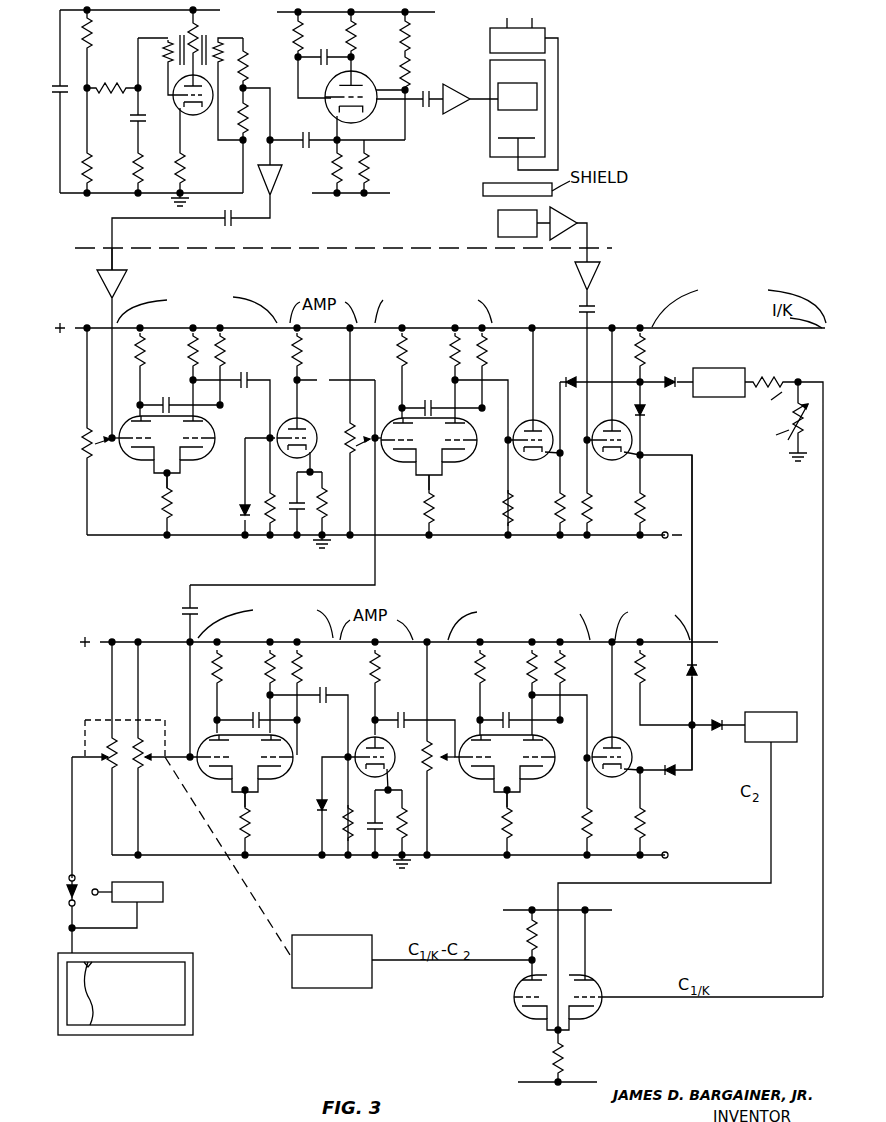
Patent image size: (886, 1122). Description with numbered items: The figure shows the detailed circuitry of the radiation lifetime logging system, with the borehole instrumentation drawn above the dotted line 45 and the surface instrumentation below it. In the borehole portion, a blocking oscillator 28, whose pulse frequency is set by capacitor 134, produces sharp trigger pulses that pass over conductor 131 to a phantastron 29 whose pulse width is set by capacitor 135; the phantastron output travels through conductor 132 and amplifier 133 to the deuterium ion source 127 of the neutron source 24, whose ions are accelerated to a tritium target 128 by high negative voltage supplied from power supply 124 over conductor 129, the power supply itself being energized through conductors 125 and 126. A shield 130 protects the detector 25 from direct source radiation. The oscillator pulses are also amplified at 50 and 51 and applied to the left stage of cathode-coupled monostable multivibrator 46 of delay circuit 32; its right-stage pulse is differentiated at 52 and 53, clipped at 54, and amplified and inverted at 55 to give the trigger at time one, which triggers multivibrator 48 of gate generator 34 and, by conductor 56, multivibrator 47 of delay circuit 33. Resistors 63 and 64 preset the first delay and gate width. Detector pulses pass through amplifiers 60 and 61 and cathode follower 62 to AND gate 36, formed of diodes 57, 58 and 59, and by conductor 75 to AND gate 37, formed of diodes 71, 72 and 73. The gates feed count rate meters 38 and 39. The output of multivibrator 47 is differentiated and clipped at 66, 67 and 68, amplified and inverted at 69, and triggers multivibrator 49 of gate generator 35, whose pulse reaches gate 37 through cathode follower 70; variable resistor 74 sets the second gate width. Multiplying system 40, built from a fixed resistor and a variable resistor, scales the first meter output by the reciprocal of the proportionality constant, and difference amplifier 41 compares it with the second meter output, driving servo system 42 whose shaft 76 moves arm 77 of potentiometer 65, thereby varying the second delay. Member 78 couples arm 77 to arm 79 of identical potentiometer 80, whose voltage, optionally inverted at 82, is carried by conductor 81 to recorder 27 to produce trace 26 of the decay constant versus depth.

The source 24 is at (490, 77).
The detector 25 is at (498, 224).
The trace 26 is at (94, 988).
The recorder 27 is at (186, 953).
The oscillator 28 is at (190, 76).
The phantastron 29 is at (355, 85).
The delay circuit 32 is at (179, 412).
The delay circuit 33 is at (261, 729).
The gate generator 34 is at (444, 412).
The gate generator 35 is at (519, 729).
The AND gate 36 is at (706, 373).
The AND gate 37 is at (663, 723).
The count rate meter 38 is at (728, 368).
The count rate meter 39 is at (778, 708).
The multiplying system 40 is at (786, 670).
The difference circuit 41 is at (510, 1010).
The servo system 42 is at (346, 935).
The dotted line 45 is at (605, 250).
The cathode-coupled monostable multivibrator 46 is at (163, 453).
The cathode-coupled monostable multivibrator 47 is at (245, 771).
The cathode-coupled monostable multivibrator 48 is at (429, 454).
The cathode-coupled monostable multivibrator 49 is at (507, 774).
The amplifier 50 is at (280, 192).
The amplifier 51 is at (128, 287).
The differentiating element 52 is at (242, 378).
The differentiating element 53 is at (268, 506).
The clipper 54 is at (240, 518).
The amplifier 55 is at (301, 425).
The conductor 56 is at (380, 572).
The diode 57 is at (577, 376).
The diode 58 is at (647, 415).
The diode 59 is at (675, 374).
The amplifier 60 is at (565, 214).
The amplifier 61 is at (595, 278).
The cathode follower 62 is at (628, 458).
The resistor 63 is at (97, 448).
The resistor 64 is at (345, 446).
The potentiometer 65 is at (151, 748).
The differentiating and clipping element 66 is at (327, 692).
The differentiating and clipping element 67 is at (349, 818).
The differentiating and clipping element 68 is at (319, 808).
The amplifier 69 is at (385, 744).
The cathode follower 70 is at (626, 748).
The diode 71 is at (668, 782).
The diode 72 is at (698, 670).
The diode 73 is at (720, 720).
The variable resistor 74 is at (441, 763).
The conductor 75 is at (697, 580).
The output shaft 76 is at (228, 857).
The arm 77 is at (177, 750).
The member 78 is at (104, 720).
The arm 79 is at (82, 756).
The potentiometer 80 is at (99, 748).
The conductor 81 is at (70, 820).
The inverter 82 is at (164, 892).
The power supply 124 is at (490, 45).
The conductor 125 is at (507, 22).
The conductor 126 is at (532, 22).
The ion source 127 is at (537, 99).
The target 128 is at (510, 140).
The conductor 129 is at (560, 70).
The shield 130 is at (478, 192).
The conductor 131 is at (322, 144).
The conductor 132 is at (448, 88).
The amplifier 133 is at (460, 108).
The capacitor 134 is at (150, 114).
The capacitor 135 is at (335, 58).